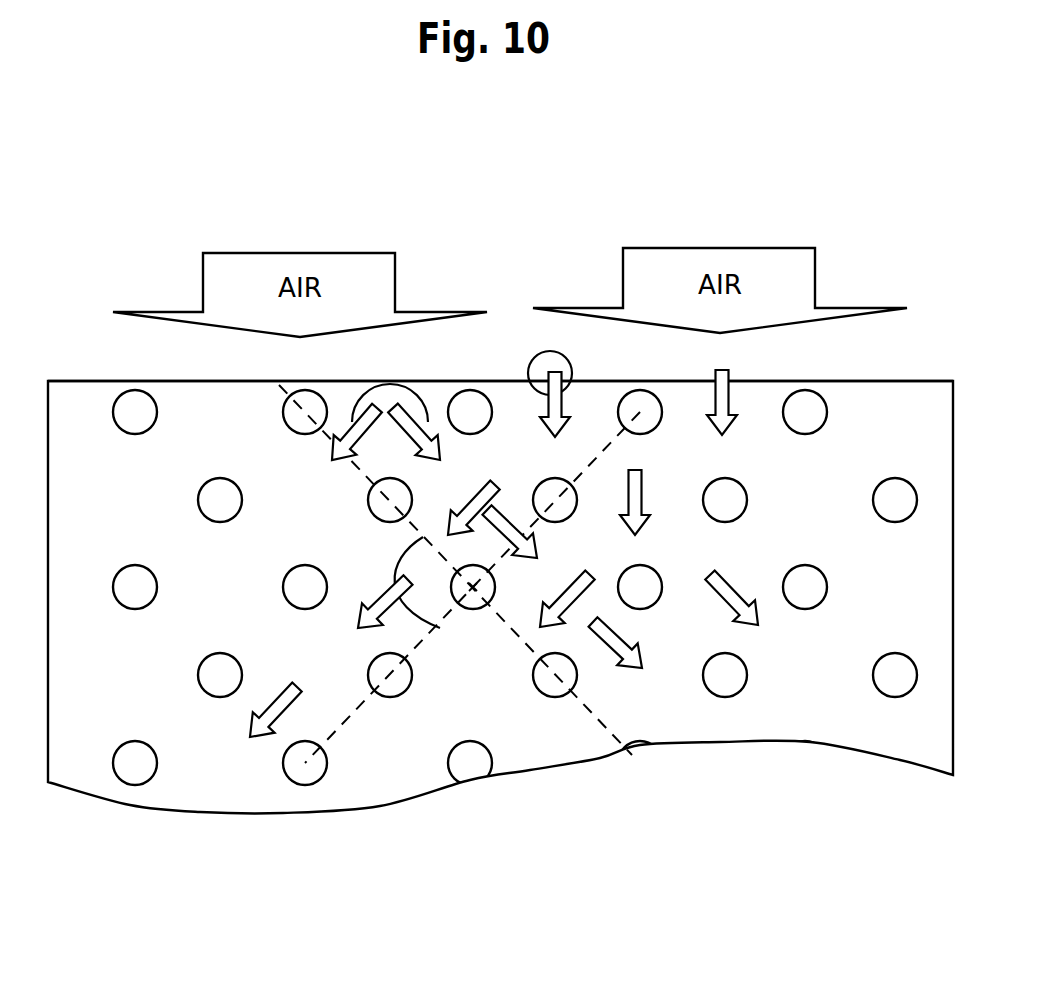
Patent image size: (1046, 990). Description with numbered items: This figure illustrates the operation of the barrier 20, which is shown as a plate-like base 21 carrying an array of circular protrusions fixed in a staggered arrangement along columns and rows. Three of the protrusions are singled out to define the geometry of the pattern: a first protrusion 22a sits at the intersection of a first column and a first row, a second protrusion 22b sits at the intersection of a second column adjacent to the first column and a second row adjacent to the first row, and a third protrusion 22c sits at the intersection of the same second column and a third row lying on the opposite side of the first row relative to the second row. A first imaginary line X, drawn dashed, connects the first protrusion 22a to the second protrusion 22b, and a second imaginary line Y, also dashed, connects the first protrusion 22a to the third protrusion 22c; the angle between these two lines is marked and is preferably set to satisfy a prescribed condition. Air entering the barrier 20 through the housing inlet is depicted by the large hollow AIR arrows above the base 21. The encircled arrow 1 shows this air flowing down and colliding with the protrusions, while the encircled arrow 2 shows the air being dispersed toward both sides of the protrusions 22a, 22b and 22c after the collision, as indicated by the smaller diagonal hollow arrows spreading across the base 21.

The barrier 20 is at (882, 816).
The base 21 is at (895, 379).
The first protrusion 22a is at (473, 609).
The second protrusion 22b is at (370, 498).
The third protrusion 22c is at (389, 697).
The arrow ① 1 is at (550, 363).
The arrow ② 2 is at (390, 392).
The first imaginary line X is at (587, 704).
The second imaginary line Y is at (417, 646).